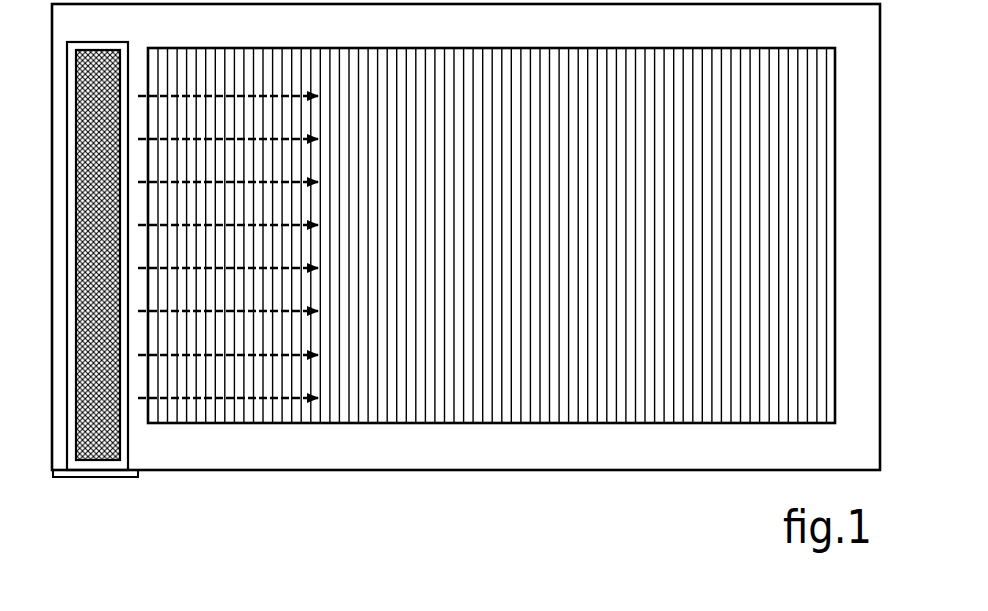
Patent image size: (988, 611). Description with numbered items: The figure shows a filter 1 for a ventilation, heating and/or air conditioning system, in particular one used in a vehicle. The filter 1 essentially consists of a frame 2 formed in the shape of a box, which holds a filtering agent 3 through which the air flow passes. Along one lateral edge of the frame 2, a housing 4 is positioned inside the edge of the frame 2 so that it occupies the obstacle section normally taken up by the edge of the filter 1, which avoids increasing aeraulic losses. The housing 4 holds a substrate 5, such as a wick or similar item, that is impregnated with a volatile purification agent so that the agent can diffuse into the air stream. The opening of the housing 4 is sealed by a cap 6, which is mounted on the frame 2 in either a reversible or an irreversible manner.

The filter 1 is at (490, 502).
The frame 2 is at (647, 470).
The filtering agent 3 is at (341, 425).
The housing 4 is at (130, 437).
The substrate 5 is at (73, 430).
The cap 6 is at (100, 478).